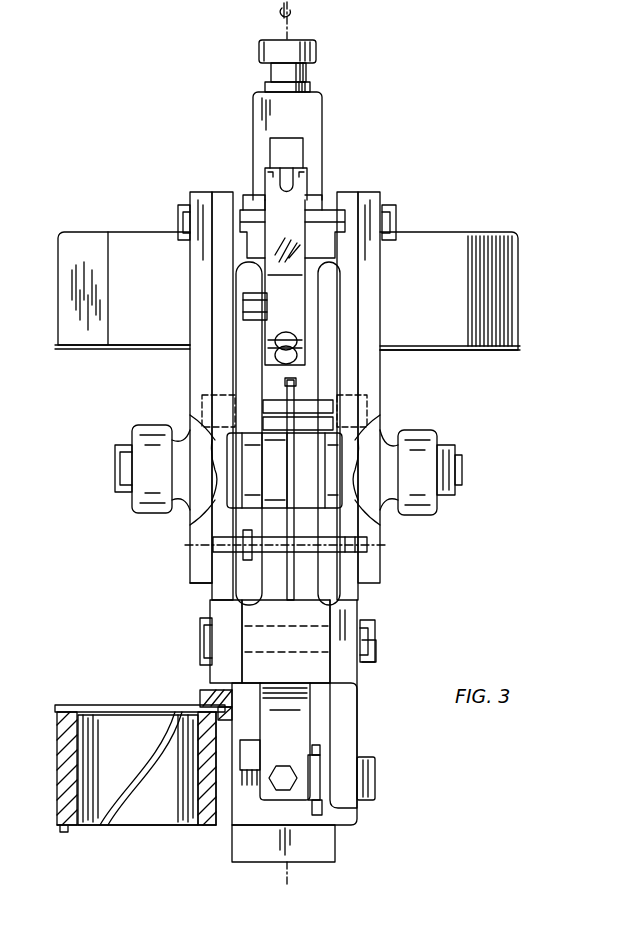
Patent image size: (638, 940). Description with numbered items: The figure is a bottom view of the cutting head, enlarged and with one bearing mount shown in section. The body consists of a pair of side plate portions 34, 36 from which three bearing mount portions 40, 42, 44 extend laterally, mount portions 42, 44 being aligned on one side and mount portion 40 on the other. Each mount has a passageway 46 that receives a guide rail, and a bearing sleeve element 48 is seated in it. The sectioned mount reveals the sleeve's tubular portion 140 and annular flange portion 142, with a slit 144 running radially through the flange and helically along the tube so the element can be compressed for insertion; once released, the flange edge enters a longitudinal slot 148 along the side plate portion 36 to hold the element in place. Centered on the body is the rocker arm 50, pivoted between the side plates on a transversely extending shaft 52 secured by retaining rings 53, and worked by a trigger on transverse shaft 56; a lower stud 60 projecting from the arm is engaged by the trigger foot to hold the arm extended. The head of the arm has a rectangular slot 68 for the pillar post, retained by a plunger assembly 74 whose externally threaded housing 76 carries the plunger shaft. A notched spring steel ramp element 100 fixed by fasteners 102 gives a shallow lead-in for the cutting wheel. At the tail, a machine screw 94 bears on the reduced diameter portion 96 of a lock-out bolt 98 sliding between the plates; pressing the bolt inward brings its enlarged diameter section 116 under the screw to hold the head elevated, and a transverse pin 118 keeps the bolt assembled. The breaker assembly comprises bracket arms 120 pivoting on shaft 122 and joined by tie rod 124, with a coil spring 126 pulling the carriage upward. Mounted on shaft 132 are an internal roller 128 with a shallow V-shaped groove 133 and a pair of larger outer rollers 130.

The retaining plunger assembly 74 is at (395, 53).
The externally threaded housing 76 is at (312, 87).
The rocker arm 50 is at (325, 138).
The rectangular slot 68 is at (272, 150).
The notched spring steel ramp element 100 is at (297, 200).
The shaft 122 is at (244, 210).
The retaining rings 53 is at (186, 205).
The bearing mount portion 42 is at (128, 255).
The bearing mount portion 40 is at (452, 240).
The bracket arms 120 is at (202, 358).
The lower stud 60 is at (245, 306).
The bearing sleeve element 48 is at (105, 352).
The fasteners 102 is at (297, 344).
The tubular portion 140 is at (325, 545).
The transverse shaft 56 is at (292, 405).
The V-shaped groove 133 is at (345, 465).
The shaft 132 is at (455, 462).
The outer rollers 130 is at (418, 490).
The internal roller 128 is at (343, 475).
The coil spring 126 is at (215, 550).
The tie rod 124 is at (345, 565).
The side plate portion 34 is at (230, 605).
The side plate portion 36 is at (350, 612).
The transversely extending shaft 52 is at (365, 645).
The lock-out bolt 98 is at (382, 776).
The machine screw 94 is at (283, 768).
The enlarged diameter section 116 is at (372, 758).
The transverse pin 118 is at (320, 805).
The longitudinal slot 148 is at (240, 700).
The annular flange portion 142 is at (70, 706).
The passageway 46 is at (80, 752).
The slit 144 is at (150, 752).
The bearing mount portion 44 is at (65, 830).
The reduced diameter portion 96 is at (245, 785).